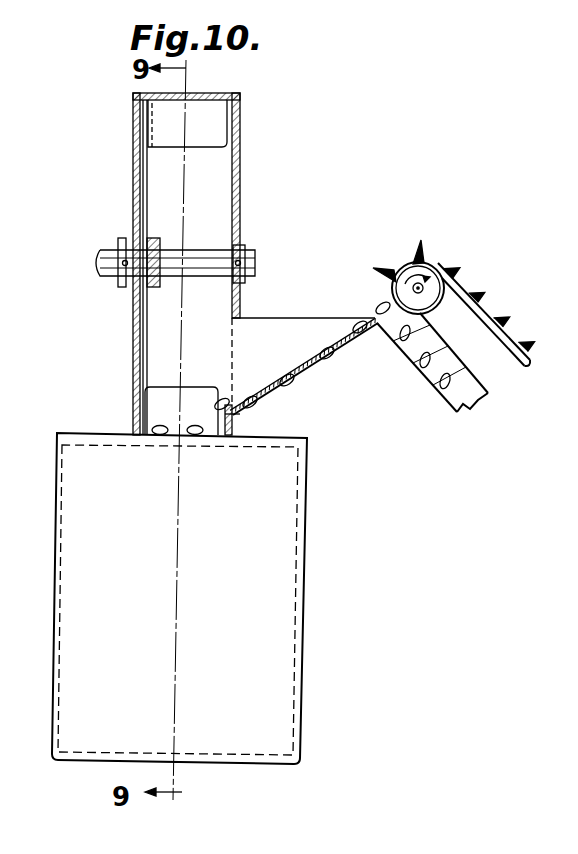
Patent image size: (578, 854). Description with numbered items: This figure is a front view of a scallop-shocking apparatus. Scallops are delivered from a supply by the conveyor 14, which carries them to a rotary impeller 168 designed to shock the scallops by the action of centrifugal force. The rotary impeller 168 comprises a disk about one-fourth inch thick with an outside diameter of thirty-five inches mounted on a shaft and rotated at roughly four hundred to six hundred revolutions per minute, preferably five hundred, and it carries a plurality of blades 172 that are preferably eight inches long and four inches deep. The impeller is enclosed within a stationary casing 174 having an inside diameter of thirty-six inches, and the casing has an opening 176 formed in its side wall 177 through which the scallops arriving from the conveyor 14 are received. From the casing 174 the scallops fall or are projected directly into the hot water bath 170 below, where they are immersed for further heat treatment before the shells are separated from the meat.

The conveyor 14 is at (468, 283).
The rotary impeller 168 is at (147, 204).
The hot water bath 170 is at (281, 497).
The blades 172 is at (212, 122).
The stationary casing 174 is at (133, 180).
The opening 176 is at (231, 357).
The side wall 177 is at (238, 214).